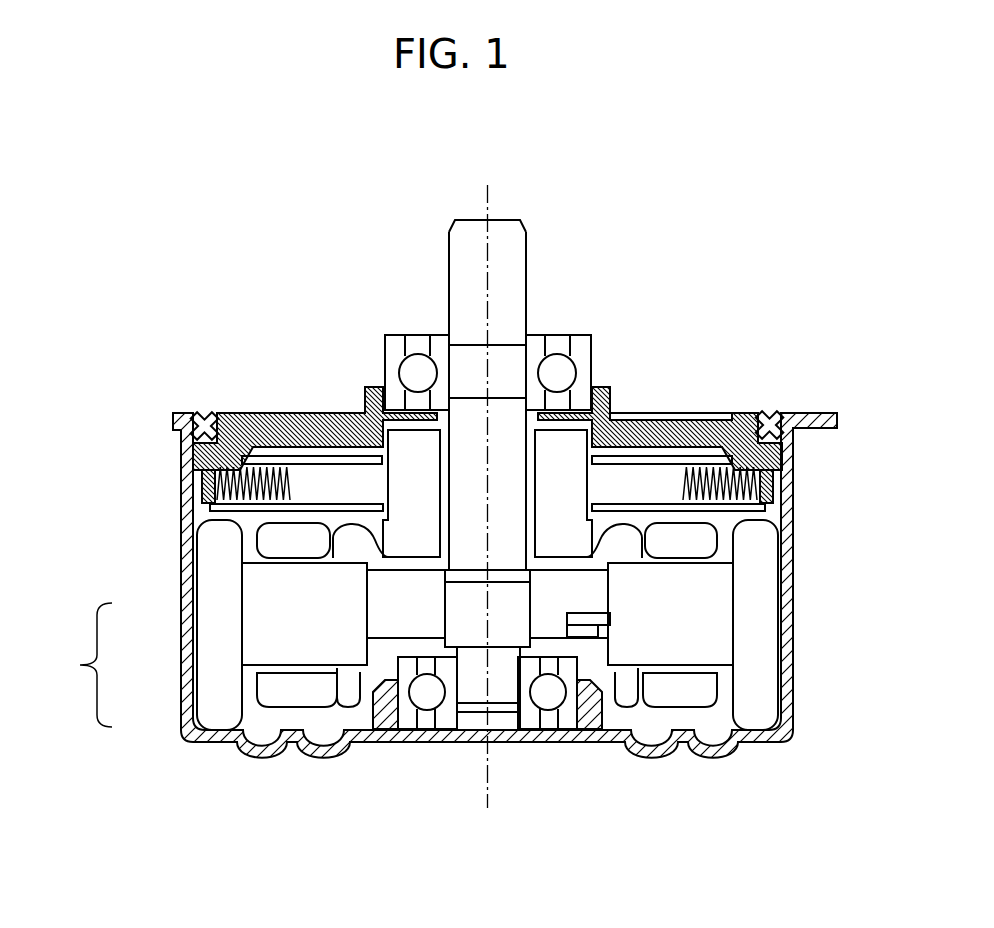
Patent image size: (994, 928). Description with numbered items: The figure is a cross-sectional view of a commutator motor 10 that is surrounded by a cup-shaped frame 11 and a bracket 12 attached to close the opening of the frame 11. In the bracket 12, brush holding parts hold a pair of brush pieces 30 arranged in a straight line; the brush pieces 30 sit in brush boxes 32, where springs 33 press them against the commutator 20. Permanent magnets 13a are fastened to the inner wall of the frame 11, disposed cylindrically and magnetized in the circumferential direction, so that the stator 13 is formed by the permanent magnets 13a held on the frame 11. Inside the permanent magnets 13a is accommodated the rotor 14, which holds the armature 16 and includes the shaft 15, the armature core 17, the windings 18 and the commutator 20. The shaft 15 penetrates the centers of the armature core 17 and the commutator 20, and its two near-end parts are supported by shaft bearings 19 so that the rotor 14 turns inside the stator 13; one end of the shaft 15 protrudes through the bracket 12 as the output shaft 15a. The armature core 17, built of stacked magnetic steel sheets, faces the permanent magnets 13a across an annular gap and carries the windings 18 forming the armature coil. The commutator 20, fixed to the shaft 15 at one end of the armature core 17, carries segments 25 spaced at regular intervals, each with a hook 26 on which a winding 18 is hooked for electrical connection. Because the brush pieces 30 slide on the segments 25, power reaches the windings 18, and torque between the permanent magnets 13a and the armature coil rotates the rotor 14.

The commutator motor 10 is at (708, 400).
The frame 11 is at (828, 413).
The bracket 12 is at (742, 410).
The stator 13 is at (757, 697).
The permanent magnets 13a is at (757, 643).
The rotor 14 is at (335, 675).
The shaft 15 is at (467, 272).
The output shaft 15a is at (508, 255).
The armature 16 is at (69, 685).
The armature core 17 is at (272, 643).
The windings 18 is at (275, 685).
The shaft bearings 19 is at (392, 347).
The commutator 20 is at (558, 475).
The segments 25 is at (362, 427).
The hook 26 is at (380, 522).
The brush pieces 30 is at (625, 477).
The brush boxes 32 is at (675, 503).
The springs 33 is at (760, 490).